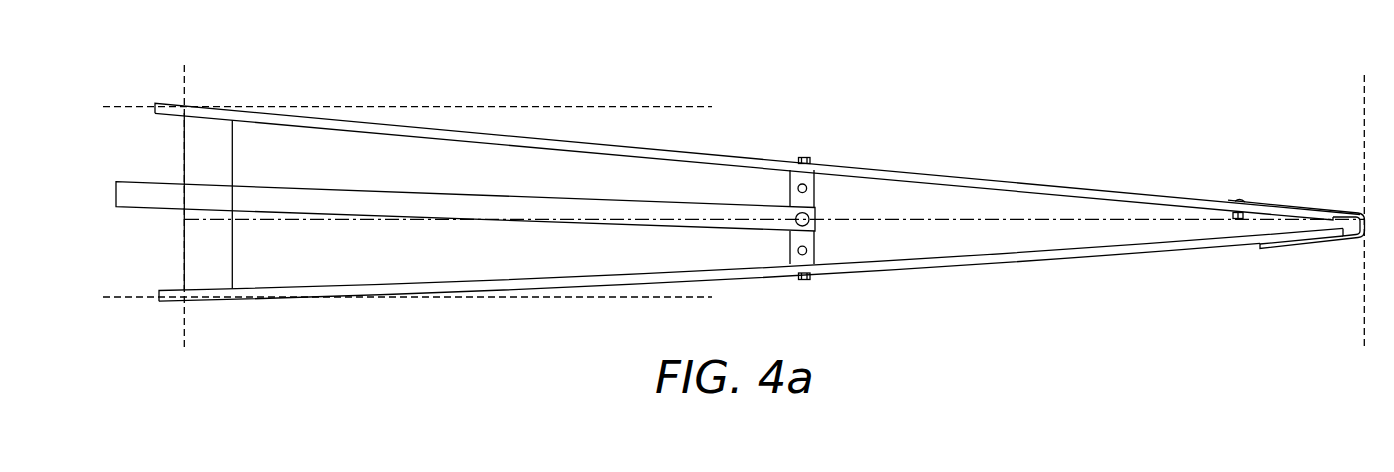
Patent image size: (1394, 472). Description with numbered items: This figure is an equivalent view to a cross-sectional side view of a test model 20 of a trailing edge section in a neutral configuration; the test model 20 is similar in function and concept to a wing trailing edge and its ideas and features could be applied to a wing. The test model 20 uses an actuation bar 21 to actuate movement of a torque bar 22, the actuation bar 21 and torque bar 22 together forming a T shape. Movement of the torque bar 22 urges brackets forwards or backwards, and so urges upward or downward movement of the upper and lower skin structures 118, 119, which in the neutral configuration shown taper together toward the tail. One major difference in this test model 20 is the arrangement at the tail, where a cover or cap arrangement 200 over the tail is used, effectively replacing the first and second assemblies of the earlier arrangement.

The test model 20 is at (1156, 88).
The upper skin structure 118 is at (552, 143).
The lower skin structure 119 is at (552, 288).
The actuation bar 21 is at (356, 198).
The torque bar 22 is at (807, 215).
The cover or cap arrangement 200 is at (1300, 187).